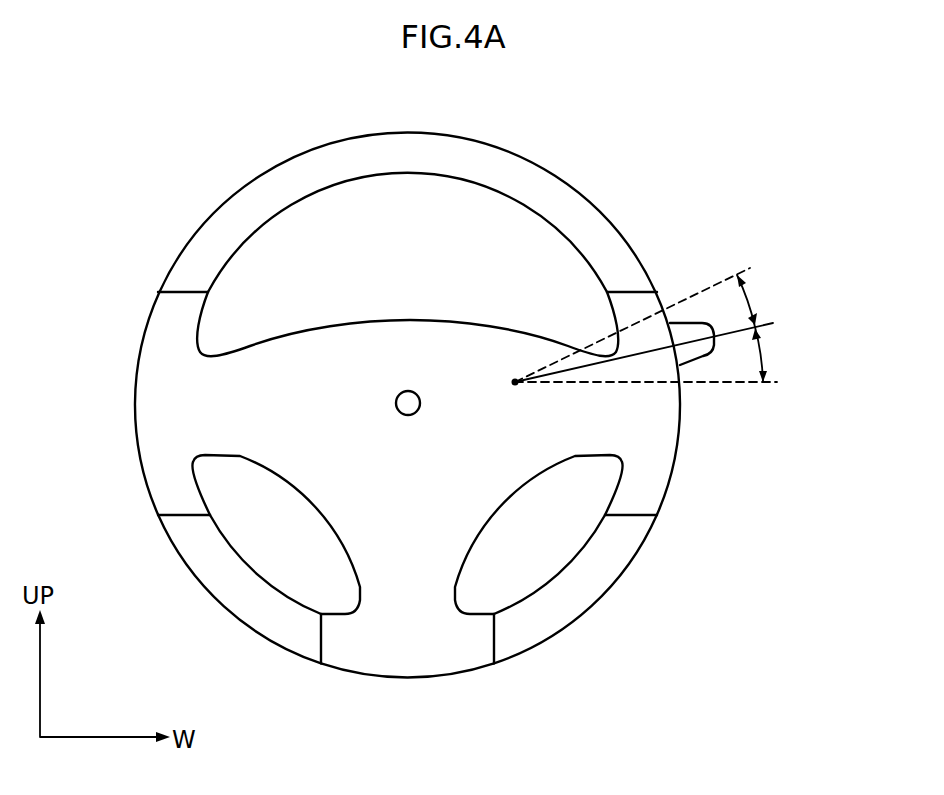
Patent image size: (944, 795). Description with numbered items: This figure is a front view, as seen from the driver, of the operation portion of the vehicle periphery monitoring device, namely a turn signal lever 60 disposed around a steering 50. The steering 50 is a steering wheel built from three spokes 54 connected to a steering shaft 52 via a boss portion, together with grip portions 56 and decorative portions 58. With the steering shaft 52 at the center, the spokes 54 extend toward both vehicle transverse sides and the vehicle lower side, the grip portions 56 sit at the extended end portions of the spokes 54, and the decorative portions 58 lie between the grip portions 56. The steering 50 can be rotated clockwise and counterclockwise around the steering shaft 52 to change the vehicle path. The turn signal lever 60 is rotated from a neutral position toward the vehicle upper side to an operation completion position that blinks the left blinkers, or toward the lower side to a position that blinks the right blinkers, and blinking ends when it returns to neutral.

The steering 50 is at (441, 414).
The steering shaft 52 is at (400, 392).
The spokes 54 is at (290, 362).
The grip portions 56 is at (147, 431).
The decorative portions 58 is at (325, 160).
The turn signal lever 60 is at (706, 282).